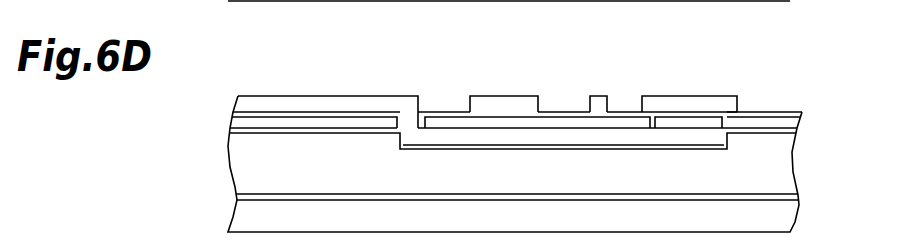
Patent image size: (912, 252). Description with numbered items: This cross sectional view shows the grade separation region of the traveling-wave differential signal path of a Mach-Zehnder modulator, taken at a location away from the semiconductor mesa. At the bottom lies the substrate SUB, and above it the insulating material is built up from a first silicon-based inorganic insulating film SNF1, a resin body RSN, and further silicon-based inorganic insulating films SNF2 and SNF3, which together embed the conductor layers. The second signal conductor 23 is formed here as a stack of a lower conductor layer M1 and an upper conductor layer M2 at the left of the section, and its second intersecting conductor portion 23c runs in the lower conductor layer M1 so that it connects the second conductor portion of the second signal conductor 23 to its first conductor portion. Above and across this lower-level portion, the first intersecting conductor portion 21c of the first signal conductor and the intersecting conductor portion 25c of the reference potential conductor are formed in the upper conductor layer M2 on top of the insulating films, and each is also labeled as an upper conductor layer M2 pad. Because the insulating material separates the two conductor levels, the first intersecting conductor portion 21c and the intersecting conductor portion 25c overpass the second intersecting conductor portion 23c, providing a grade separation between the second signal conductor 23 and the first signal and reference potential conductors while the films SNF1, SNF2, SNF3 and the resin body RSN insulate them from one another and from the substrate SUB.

The substrate SUB is at (316, 228).
The first silicon-based inorganic insulating film SNF1 is at (258, 198).
The second silicon-based inorganic insulating film SNF2 is at (399, 149).
The third silicon-based inorganic insulating film SNF3 is at (254, 118).
The resin body RSN is at (295, 148).
The second signal conductor 23 is at (448, 50).
The lower conductor layer M1 is at (433, 137).
The upper conductor layer M2 is at (375, 97).
The first intersecting conductor portion 21c is at (504, 66).
The intersecting conductor portion 25c is at (598, 66).
The second intersecting conductor portion 23c is at (689, 66).